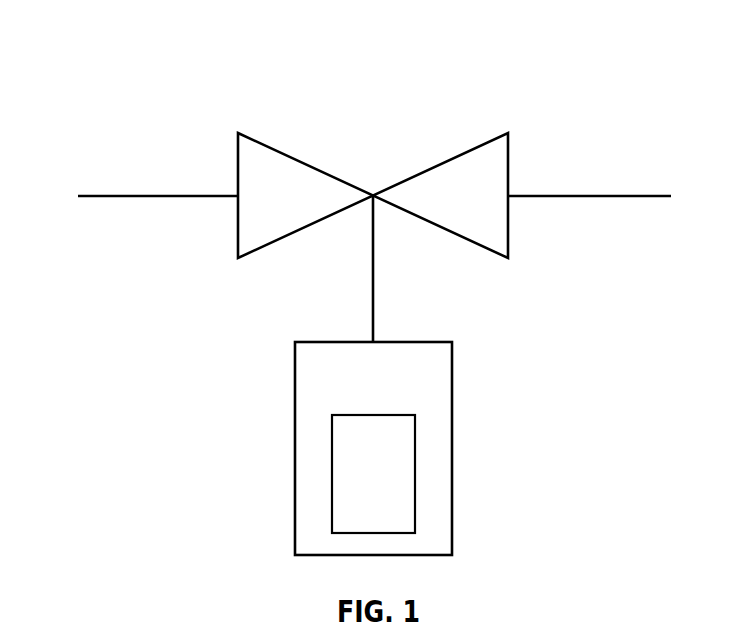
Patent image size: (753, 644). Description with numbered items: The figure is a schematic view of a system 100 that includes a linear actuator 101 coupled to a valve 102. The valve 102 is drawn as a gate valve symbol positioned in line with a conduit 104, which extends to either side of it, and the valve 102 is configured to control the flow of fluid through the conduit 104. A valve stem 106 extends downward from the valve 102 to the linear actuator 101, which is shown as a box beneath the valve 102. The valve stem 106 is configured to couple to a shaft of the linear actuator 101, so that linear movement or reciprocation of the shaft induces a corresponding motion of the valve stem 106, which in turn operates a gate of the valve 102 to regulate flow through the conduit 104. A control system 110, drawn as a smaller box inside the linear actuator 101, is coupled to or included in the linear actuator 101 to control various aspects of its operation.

The system 100 is at (128, 38).
The linear actuator 101 is at (383, 341).
The valve 102 is at (438, 163).
The conduit 104 is at (158, 195).
The valve stem 106 is at (372, 270).
The control system 110 is at (369, 414).